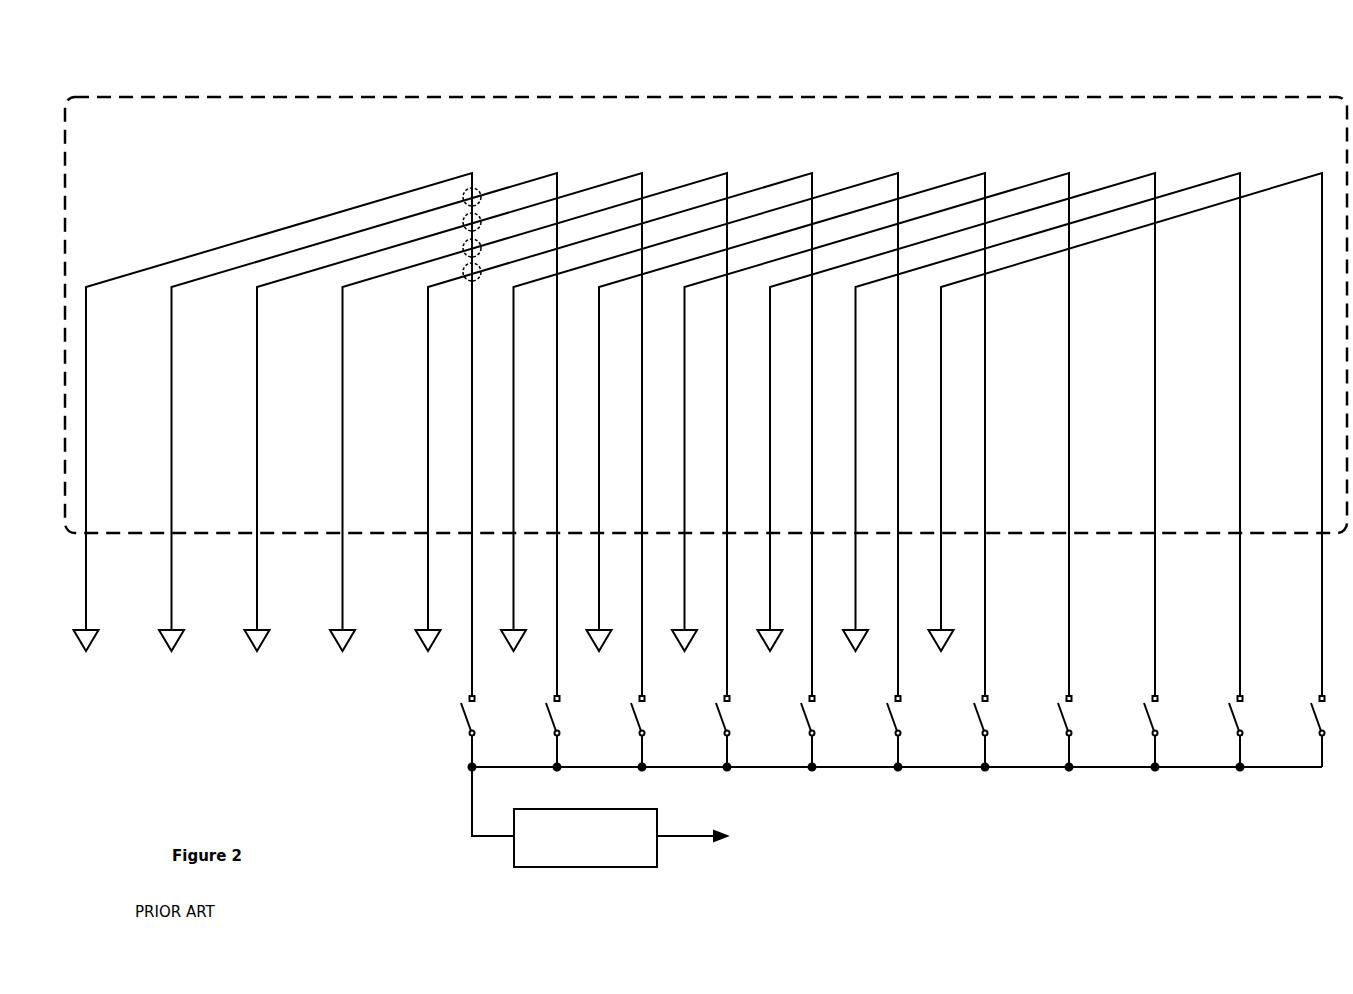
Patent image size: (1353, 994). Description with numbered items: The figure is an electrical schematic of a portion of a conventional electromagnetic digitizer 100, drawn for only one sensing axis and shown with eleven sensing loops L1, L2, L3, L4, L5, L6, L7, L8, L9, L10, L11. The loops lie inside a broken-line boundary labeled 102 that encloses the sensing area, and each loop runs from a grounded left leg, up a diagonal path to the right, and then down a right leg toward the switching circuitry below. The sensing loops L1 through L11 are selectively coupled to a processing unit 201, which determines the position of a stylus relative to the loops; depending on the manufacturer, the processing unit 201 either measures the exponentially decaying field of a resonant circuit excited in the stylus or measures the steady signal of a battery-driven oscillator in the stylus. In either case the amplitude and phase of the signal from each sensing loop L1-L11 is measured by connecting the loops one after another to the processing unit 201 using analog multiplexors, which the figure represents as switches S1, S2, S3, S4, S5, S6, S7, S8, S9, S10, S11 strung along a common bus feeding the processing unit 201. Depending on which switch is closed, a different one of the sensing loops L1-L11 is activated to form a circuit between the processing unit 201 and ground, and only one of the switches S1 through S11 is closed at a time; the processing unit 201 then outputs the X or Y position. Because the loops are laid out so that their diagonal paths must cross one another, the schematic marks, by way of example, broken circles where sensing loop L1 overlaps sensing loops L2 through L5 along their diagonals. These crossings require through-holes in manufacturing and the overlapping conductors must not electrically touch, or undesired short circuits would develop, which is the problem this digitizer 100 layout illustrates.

The electromagnetic digitizer 100 is at (699, 446).
The sensing region 102 is at (997, 97).
The processing unit 201 is at (572, 859).
The sensing loop L1 is at (432, 184).
The sensing loop L2 is at (517, 184).
The sensing loop L3 is at (602, 184).
The sensing loop L4 is at (687, 184).
The sensing loop L5 is at (772, 184).
The sensing loop L6 is at (858, 184).
The sensing loop L7 is at (945, 184).
The sensing loop L8 is at (1029, 184).
The sensing loop L9 is at (1115, 184).
The sensing loop L10 is at (1200, 184).
The sensing loop L11 is at (1282, 184).
The switch S1 is at (481, 733).
The switch S2 is at (566, 733).
The switch S3 is at (651, 733).
The switch S4 is at (736, 733).
The switch S5 is at (821, 733).
The switch S6 is at (907, 733).
The switch S7 is at (994, 733).
The switch S8 is at (1078, 733).
The switch S9 is at (1164, 733).
The switch S10 is at (1253, 733).
The switch S11 is at (1305, 720).